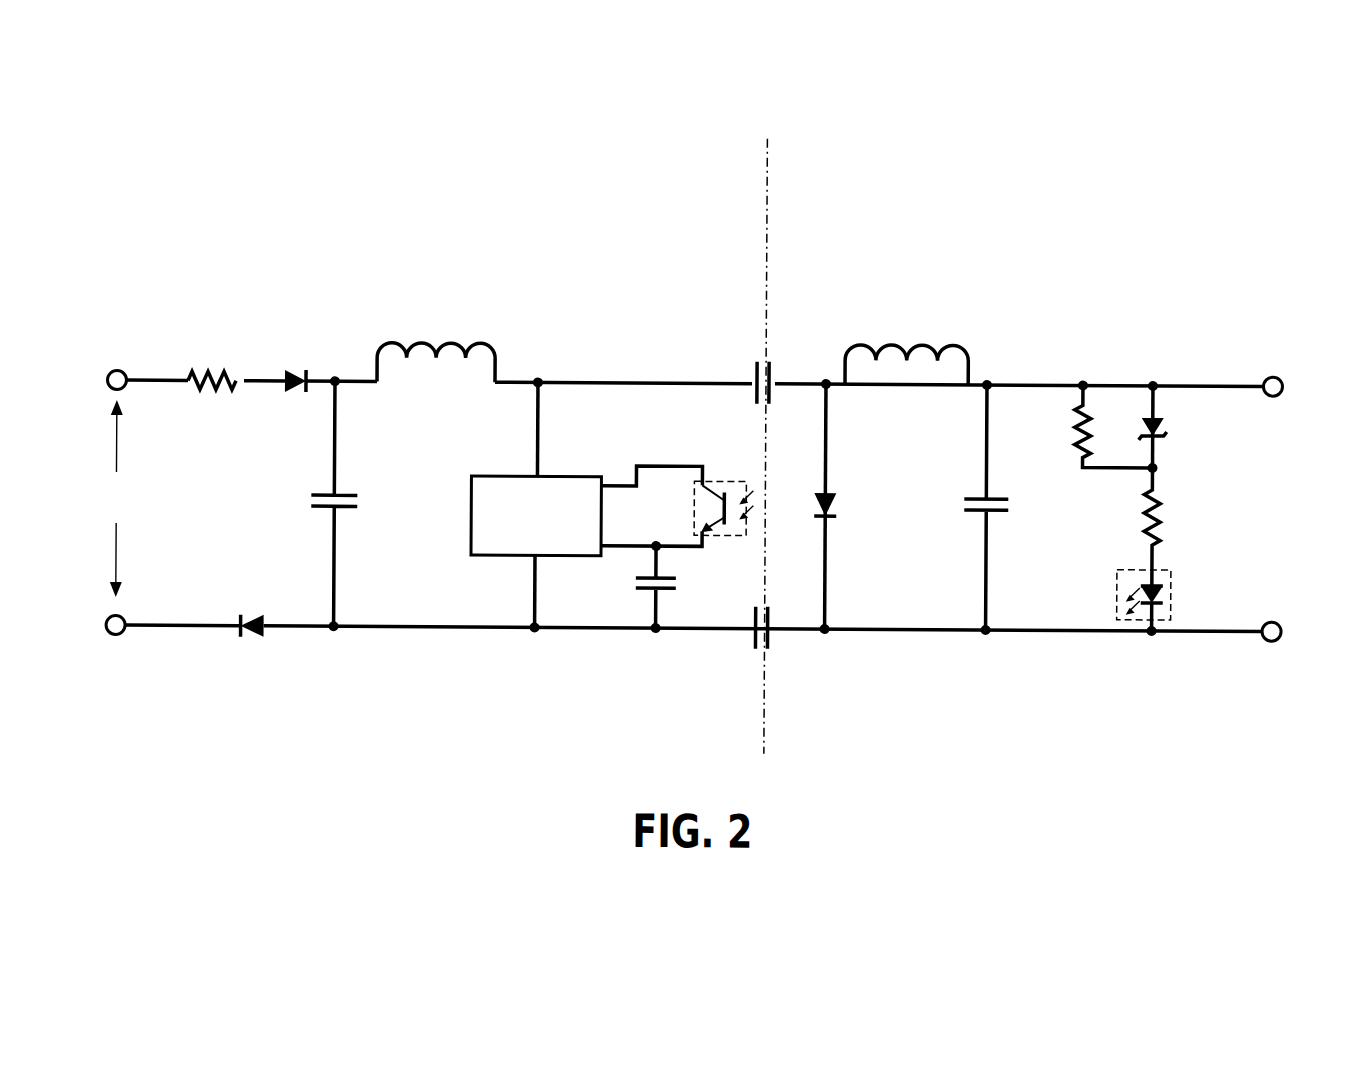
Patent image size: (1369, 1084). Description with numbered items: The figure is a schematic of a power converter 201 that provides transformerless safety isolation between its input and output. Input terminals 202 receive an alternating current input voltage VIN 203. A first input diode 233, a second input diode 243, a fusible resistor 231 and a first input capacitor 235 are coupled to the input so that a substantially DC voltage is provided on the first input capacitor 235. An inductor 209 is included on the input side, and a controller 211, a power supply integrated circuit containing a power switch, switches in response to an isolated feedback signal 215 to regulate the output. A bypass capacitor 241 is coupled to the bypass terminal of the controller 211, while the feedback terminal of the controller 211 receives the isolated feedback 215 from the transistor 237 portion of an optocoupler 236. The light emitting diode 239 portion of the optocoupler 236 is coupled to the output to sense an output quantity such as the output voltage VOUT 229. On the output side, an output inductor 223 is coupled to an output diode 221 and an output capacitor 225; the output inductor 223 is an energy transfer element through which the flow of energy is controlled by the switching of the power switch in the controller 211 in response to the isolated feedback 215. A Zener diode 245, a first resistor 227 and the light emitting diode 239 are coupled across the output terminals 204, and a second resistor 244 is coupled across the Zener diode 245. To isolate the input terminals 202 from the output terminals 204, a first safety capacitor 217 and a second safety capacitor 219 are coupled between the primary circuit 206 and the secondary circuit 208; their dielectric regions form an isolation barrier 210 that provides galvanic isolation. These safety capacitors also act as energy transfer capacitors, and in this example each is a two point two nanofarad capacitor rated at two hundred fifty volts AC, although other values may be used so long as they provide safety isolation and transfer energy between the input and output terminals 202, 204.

The power converter 201 is at (1162, 210).
The input terminals 202 is at (97, 361).
The input voltage VIN 203 is at (95, 480).
The output terminals 204 is at (1292, 378).
The primary circuit 206 is at (712, 225).
The secondary circuit 208 is at (852, 225).
The inductor 209 is at (410, 333).
The isolation barrier 210 is at (775, 712).
The controller 211 is at (470, 482).
The isolated feedback signal 215 is at (875, 492).
The safety capacitor C3 217 is at (775, 357).
The safety capacitor C4 219 is at (790, 640).
The diode D3 221 is at (850, 520).
The inductor L2 223 is at (938, 342).
The capacitor C5 225 is at (968, 493).
The resistor R1 227 is at (1145, 513).
The output voltage VOUT 229 is at (1293, 484).
The fusible resistor RF1 231 is at (212, 327).
The diode D1 233 is at (297, 330).
The capacitor C1 235 is at (280, 495).
The optocoupler 236 is at (738, 478).
The transistor portion of optocoupler 237 is at (720, 533).
The light emitting diode portion of optocoupler 239 is at (1122, 602).
The capacitor C2 241 is at (635, 585).
The diode D2 243 is at (272, 665).
The resistor R2 244 is at (1093, 421).
The Zener diode VR1 245 is at (1152, 436).